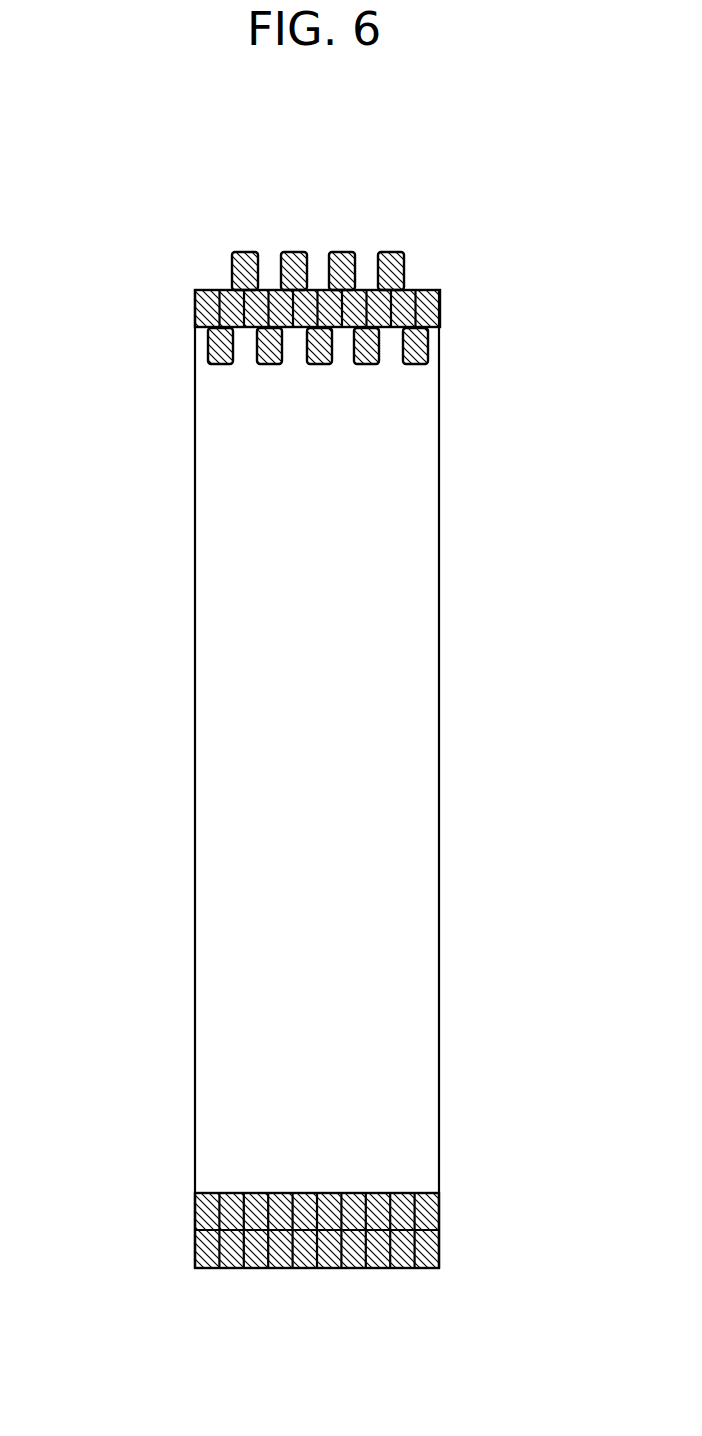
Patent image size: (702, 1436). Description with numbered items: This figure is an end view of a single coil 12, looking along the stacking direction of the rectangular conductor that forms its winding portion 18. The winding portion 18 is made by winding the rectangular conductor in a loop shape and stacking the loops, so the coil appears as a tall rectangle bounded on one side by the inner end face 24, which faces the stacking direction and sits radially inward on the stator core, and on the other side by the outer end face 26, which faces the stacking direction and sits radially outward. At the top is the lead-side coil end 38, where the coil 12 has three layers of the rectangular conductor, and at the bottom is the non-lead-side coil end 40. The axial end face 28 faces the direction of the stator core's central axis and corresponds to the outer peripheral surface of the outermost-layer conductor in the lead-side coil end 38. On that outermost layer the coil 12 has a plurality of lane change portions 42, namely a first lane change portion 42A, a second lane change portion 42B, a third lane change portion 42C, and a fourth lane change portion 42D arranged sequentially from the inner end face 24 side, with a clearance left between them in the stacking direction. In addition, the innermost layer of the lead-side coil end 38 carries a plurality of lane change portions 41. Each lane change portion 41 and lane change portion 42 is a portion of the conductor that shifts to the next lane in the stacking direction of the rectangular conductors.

The coil 12 is at (94, 532).
The winding portion 18 is at (441, 650).
The inner end face 24 is at (441, 765).
The outer end face 26 is at (194, 767).
The axial end face 28 is at (293, 253).
The lead-side coil end 38 is at (453, 279).
The non-lead-side coil end 40 is at (446, 1233).
The lane change portion 41 is at (418, 411).
The lane change portion 42 is at (322, 200).
The first lane change portion 42A is at (390, 273).
The second lane change portion 42B is at (332, 270).
The third lane change portion 42C is at (303, 268).
The fourth lane change portion 42D is at (242, 270).